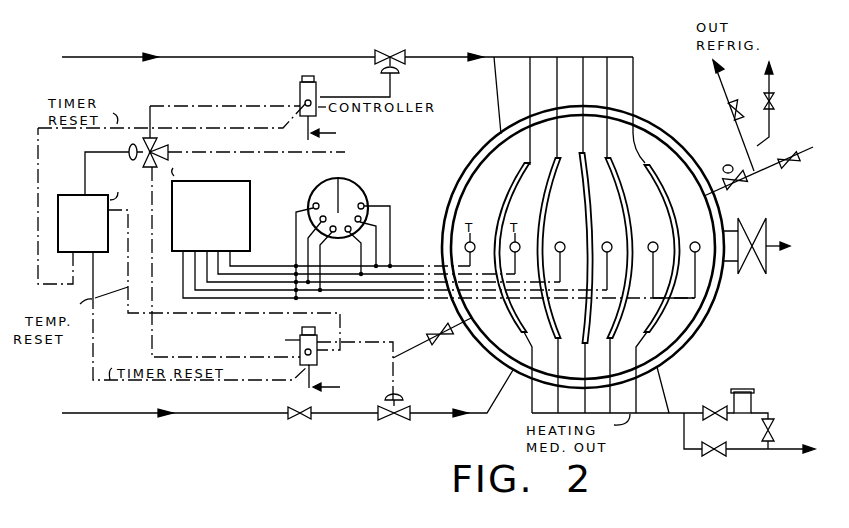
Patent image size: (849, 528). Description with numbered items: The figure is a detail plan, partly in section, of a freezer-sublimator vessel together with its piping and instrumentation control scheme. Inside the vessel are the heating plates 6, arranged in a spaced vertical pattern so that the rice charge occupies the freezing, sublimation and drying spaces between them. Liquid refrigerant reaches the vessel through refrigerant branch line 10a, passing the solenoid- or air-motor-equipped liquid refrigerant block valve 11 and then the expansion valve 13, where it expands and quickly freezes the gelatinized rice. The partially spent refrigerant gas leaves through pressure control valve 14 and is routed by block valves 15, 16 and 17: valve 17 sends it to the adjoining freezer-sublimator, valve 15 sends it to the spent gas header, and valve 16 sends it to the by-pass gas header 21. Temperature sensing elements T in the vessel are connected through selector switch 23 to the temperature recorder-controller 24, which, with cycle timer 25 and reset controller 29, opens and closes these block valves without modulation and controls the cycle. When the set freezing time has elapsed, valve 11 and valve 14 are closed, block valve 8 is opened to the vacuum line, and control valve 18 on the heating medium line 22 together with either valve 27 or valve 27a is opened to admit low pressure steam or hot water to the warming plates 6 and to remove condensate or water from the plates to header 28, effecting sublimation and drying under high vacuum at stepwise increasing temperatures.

The heating plates 6 is at (514, 187).
The block valve 8 is at (760, 275).
The refrigerant branch line 10a is at (228, 416).
The liquid refrigerant block valve 11 is at (301, 421).
The expansion valve 13 is at (395, 421).
The pressure control valve 14 is at (736, 188).
The block valve 15 is at (778, 101).
The block valve 16 is at (729, 111).
The block valve 17 is at (441, 342).
The control valve 18 is at (362, 64).
The by-pass gas header 21 is at (416, 351).
The heating medium inlet line 22 is at (232, 40).
The selector switch 23 is at (348, 191).
The temperature recorder-controller 24 is at (218, 223).
The cycle timer 25 is at (91, 232).
The valve 27 is at (713, 406).
The valve 27a is at (706, 455).
The header 28 is at (752, 451).
The reset controller 29 is at (318, 357).